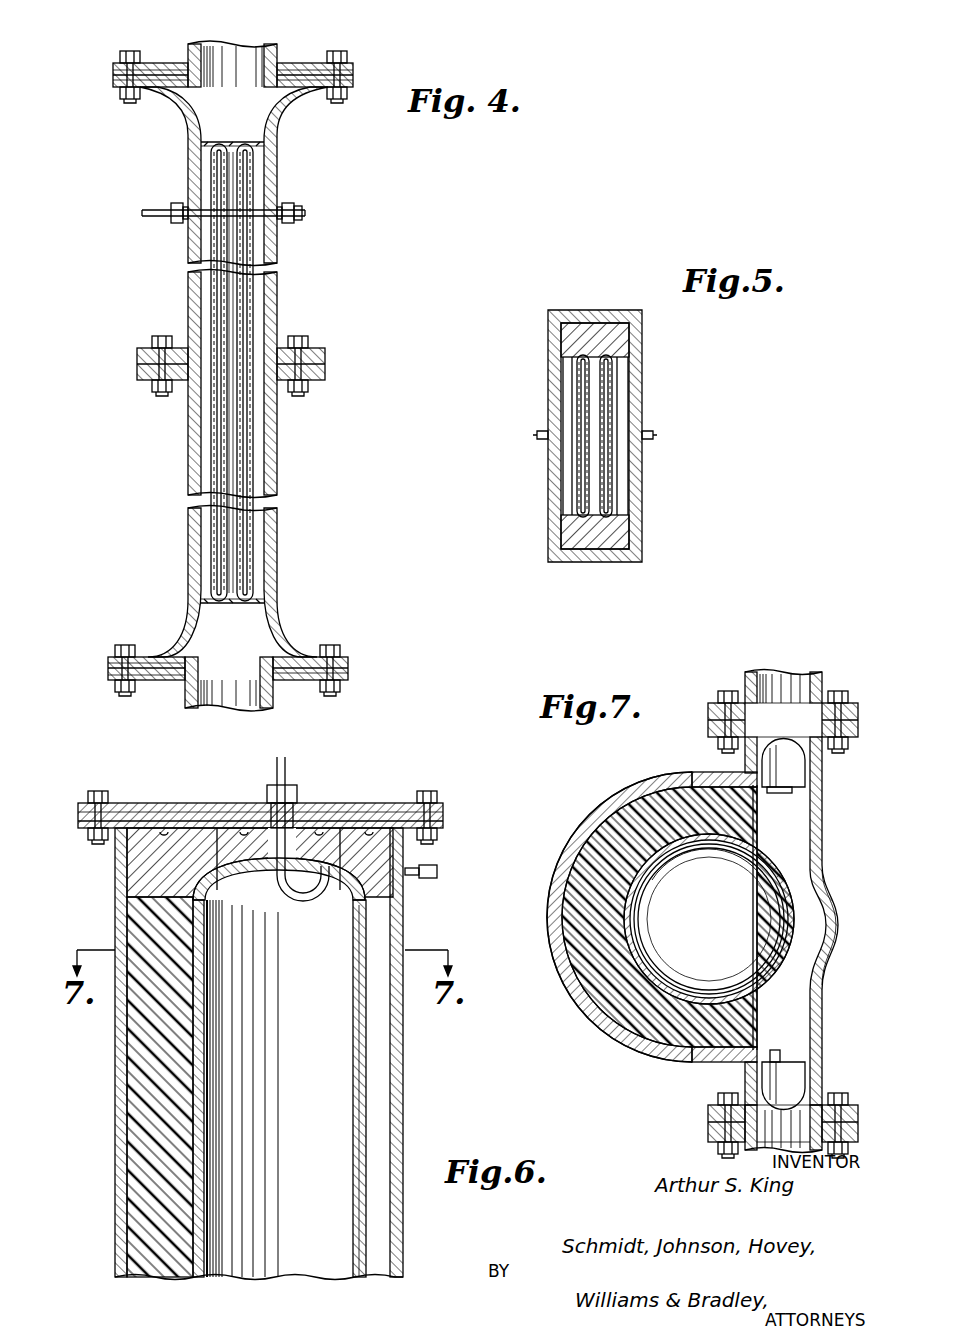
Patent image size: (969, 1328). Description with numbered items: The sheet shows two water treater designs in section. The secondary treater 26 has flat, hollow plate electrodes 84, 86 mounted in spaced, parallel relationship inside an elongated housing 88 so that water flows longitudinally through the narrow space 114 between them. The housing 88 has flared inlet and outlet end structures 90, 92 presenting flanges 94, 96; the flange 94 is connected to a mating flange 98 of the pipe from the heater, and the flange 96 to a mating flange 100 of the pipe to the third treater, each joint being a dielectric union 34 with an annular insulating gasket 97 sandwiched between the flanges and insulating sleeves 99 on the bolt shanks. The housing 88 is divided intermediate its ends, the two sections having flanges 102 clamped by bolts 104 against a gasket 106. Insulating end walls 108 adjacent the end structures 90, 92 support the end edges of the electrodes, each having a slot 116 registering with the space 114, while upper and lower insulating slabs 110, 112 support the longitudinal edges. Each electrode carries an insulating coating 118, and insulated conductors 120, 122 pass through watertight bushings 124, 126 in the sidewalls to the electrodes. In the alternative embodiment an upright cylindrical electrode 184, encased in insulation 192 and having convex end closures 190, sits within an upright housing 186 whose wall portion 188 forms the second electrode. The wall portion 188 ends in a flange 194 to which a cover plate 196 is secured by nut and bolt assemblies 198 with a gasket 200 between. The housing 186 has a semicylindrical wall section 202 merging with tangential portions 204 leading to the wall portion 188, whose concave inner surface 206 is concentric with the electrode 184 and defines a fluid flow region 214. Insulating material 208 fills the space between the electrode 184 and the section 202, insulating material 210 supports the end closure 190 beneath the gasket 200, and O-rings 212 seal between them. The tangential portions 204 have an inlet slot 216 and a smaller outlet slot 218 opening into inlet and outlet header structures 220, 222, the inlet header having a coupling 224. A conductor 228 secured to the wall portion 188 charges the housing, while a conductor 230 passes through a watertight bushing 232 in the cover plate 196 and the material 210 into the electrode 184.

In FIG. 4, the secondary treater 26 is at (118, 77).
In FIG. 4, the dielectric union 34 is at (360, 74).
In FIG. 4, the plate electrode 84 is at (207, 310).
In FIG. 5, the plate electrode 84 is at (566, 393).
In FIG. 4, the plate electrode 86 is at (260, 316).
In FIG. 5, the plate electrode 86 is at (622, 400).
In FIG. 4, the housing 88 is at (278, 478).
In FIG. 5, the housing 88 is at (645, 368).
In FIG. 4, the inlet end structure 90 is at (282, 120).
In FIG. 4, the outlet end structure 92 is at (282, 626).
In FIG. 4, the flange 94 is at (122, 95).
In FIG. 4, the flange 96 is at (110, 660).
In FIG. 4, the annular gasket 97 is at (178, 70).
In FIG. 4, the mating flange 98 is at (347, 63).
In FIG. 4, the insulating sleeve 99 is at (124, 56).
In FIG. 4, the mating flange 100 is at (110, 676).
In FIG. 4, the flange 102 is at (330, 364).
In FIG. 4, the bolt 104 is at (312, 346).
In FIG. 4, the gasket 106 is at (137, 364).
In FIG. 4, the end wall 108 is at (203, 152).
In FIG. 5, the upper slab 110 is at (588, 325).
In FIG. 5, the lower slab 112 is at (628, 560).
In FIG. 4, the space 114 is at (254, 290).
In FIG. 4, the slot 116 is at (238, 140).
In FIG. 4, the insulating coating 118 is at (254, 443).
In FIG. 5, the insulating coating 118 is at (575, 470).
In FIG. 4, the insulated electrical conductor 120 is at (142, 213).
In FIG. 4, the insulated electrical conductor 122 is at (299, 210).
In FIG. 4, the watertight bushing 124 is at (177, 224).
In FIG. 4, the watertight bushing 126 is at (295, 218).
In FIG. 6, the cylindrical electrode 184 is at (372, 1073).
In FIG. 7, the cylindrical electrode 184 is at (632, 966).
In FIG. 6, the housing 186 is at (112, 1140).
In FIG. 7, the housing 186 is at (599, 1048).
In FIG. 7, the wall portion 188 is at (835, 870).
In FIG. 6, the convex end closure 190 is at (245, 872).
In FIG. 7, the convex end closure 190 is at (748, 968).
In FIG. 6, the insulation 192 is at (360, 1135).
In FIG. 6, the flange 194 is at (430, 836).
In FIG. 6, the cover plate 196 is at (368, 805).
In FIG. 6, the nut and bolt assembly 198 is at (430, 795).
In FIG. 6, the gasket 200 is at (443, 822).
In FIG. 7, the semicylindrical wall section 202 is at (540, 966).
In FIG. 7, the tangential wall portion 204 is at (740, 780).
In FIG. 7, the concave inner surface 206 is at (838, 914).
In FIG. 7, the insulating material 208 is at (605, 822).
In FIG. 6, the insulating material 210 is at (183, 850).
In FIG. 6, the O-ring 212 is at (318, 825).
In FIG. 7, the region 214 is at (785, 914).
In FIG. 7, the inlet slot 216 is at (825, 802).
In FIG. 7, the outlet slot 218 is at (790, 1050).
In FIG. 7, the inlet header structure 220 is at (822, 760).
In FIG. 7, the outlet header structure 222 is at (822, 1085).
In FIG. 7, the coupling 224 is at (852, 706).
In FIG. 6, the conductor 228 is at (436, 874).
In FIG. 6, the conductor 230 is at (312, 906).
In FIG. 6, the watertight bushing 232 is at (265, 800).